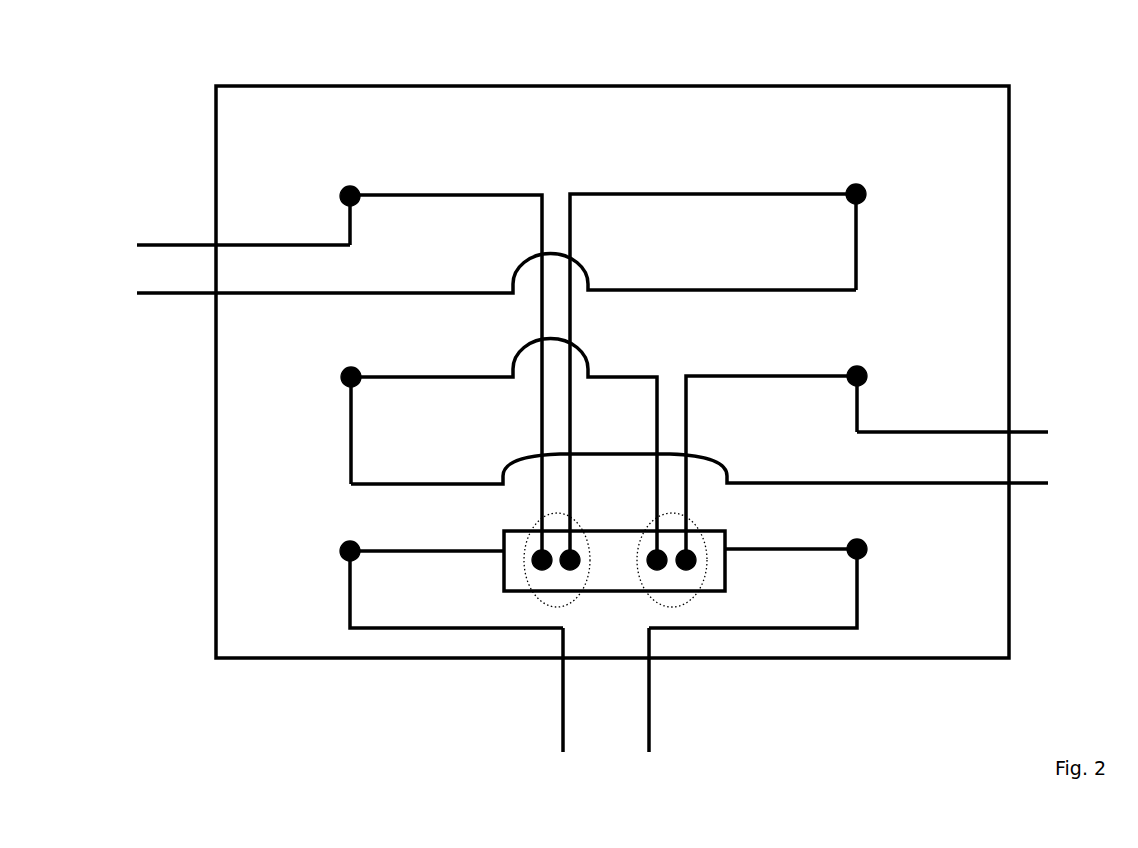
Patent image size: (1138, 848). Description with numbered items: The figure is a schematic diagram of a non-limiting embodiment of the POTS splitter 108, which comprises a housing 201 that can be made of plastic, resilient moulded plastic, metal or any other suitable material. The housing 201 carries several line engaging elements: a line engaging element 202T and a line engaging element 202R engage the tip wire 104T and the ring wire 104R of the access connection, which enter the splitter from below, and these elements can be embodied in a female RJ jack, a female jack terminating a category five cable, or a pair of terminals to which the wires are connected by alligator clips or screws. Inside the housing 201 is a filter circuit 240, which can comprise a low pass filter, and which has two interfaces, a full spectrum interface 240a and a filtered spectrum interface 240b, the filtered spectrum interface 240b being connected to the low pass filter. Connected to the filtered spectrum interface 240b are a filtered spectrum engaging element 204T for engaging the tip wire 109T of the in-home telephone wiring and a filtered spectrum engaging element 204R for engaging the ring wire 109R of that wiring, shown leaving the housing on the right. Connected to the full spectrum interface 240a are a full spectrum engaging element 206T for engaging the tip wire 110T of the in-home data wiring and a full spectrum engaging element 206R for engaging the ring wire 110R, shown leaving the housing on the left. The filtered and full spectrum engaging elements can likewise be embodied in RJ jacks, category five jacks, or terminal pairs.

The housing 201 is at (913, 84).
The POTS splitter 108 is at (167, 668).
The tip wire of in-home data wiring 110T is at (176, 243).
The ring wire of in-home data wiring 110R is at (176, 296).
The tip wire of in-home telephone wiring 109T is at (1030, 485).
The ring wire of in-home telephone wiring 109R is at (1030, 431).
The tip wire of access connection 104T is at (563, 703).
The ring wire of access connection 104R is at (650, 703).
The full spectrum engaging element 206T is at (342, 189).
The full spectrum engaging element 206R is at (862, 186).
The filtered spectrum engaging element 204T is at (343, 371).
The filtered spectrum engaging element 204R is at (863, 368).
The line engaging element 202T is at (343, 545).
The line engaging element 202R is at (865, 540).
The filter circuit 240 is at (725, 578).
The full spectrum interface 240a is at (536, 522).
The filtered spectrum interface 240b is at (693, 521).